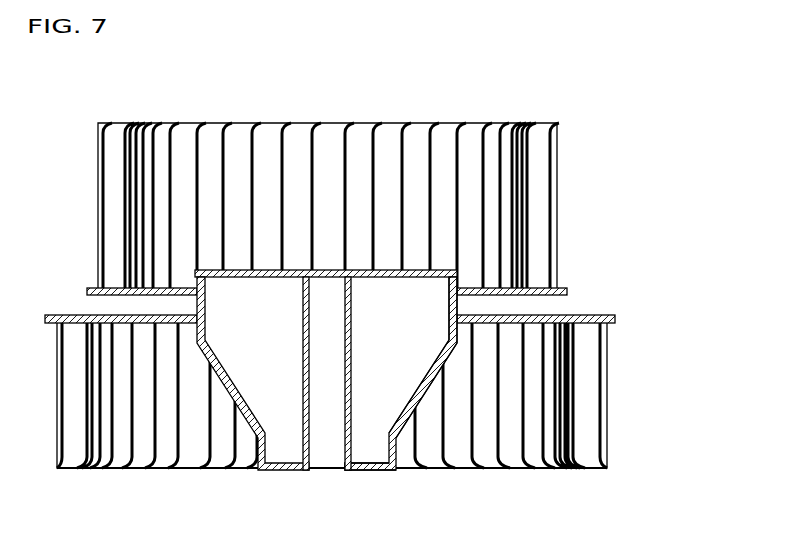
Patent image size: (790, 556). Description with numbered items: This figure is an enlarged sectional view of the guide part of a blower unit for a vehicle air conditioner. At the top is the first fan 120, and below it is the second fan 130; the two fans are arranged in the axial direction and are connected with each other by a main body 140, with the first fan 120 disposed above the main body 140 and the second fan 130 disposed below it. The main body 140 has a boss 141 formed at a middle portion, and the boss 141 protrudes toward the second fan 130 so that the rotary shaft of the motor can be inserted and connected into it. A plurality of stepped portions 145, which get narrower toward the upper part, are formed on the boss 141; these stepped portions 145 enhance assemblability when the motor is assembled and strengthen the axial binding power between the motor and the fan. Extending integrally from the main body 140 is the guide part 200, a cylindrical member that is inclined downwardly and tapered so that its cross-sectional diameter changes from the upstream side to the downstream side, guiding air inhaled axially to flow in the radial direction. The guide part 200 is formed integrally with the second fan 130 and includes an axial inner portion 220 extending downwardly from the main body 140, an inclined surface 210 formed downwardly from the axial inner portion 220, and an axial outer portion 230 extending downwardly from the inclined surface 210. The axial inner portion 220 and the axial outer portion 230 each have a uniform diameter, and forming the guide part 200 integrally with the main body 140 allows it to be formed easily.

The first fan 120 is at (569, 214).
The second fan 130 is at (622, 400).
The main body 140 is at (392, 314).
The boss 141 is at (345, 442).
The stepped portion 145 is at (295, 270).
The guide part 200 is at (542, 411).
The inclined surface 210 is at (436, 368).
The axial inner portion 220 is at (457, 330).
The axial outer portion 230 is at (398, 458).